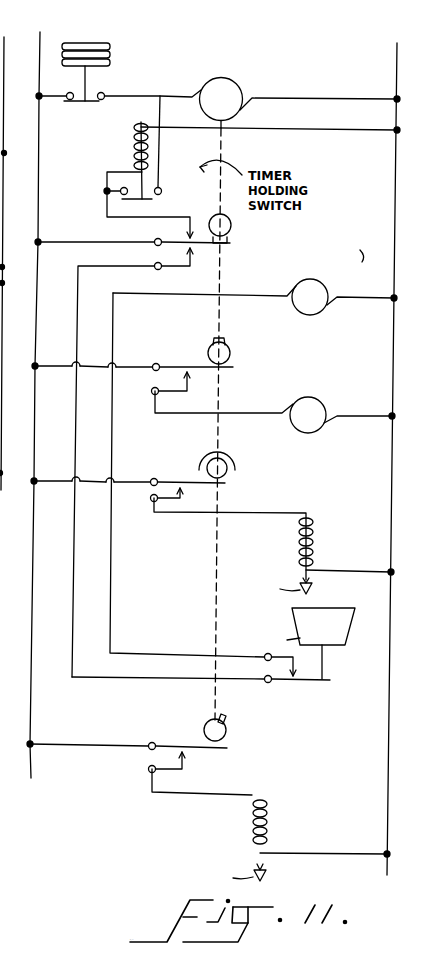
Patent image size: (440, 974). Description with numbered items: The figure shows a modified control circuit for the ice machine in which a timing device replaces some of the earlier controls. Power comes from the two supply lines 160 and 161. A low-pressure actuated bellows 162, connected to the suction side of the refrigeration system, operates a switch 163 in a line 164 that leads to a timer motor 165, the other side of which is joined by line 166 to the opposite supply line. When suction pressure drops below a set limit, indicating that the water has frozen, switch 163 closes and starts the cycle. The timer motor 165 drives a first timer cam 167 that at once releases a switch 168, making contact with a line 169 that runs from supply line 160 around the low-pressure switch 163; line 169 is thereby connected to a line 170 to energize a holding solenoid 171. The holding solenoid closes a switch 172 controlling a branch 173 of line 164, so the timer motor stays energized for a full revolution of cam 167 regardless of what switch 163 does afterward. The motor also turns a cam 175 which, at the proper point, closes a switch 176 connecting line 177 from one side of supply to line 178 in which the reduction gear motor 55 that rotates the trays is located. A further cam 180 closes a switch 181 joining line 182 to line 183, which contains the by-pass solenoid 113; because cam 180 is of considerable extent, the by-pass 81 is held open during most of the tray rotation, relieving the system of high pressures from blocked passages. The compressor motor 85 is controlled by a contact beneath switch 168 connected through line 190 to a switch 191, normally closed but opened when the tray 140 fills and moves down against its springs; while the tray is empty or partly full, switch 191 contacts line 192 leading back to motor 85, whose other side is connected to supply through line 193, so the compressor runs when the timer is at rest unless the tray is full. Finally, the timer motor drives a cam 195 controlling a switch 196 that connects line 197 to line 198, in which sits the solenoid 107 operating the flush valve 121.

The supply line 160 is at (41, 46).
The supply line 161 is at (397, 60).
The low-pressure actuated bellows 162 is at (110, 48).
The switch 163 is at (84, 103).
The line 164 is at (134, 94).
The timer motor 165 is at (237, 80).
The line 166 is at (308, 98).
The first timer cam 167 is at (230, 237).
The switch 168 is at (227, 246).
The line 169 is at (63, 241).
The line 170 is at (319, 131).
The holding solenoid 171 is at (133, 143).
The switch 172 is at (247, 190).
The branch 173 is at (157, 107).
The cam 175 is at (225, 340).
The switch 176 is at (177, 365).
The line 177 is at (55, 365).
The line 178 is at (361, 418).
The cam 180 is at (233, 457).
The switch 181 is at (200, 502).
The line 182 is at (52, 480).
The line 183 is at (348, 571).
The line 190 is at (76, 418).
The switch 191 is at (307, 681).
The line 192 is at (110, 605).
The line 193 is at (364, 301).
The cam 195 is at (227, 736).
The switch 196 is at (172, 744).
The line 197 is at (95, 744).
The line 198 is at (324, 853).
The compressor motor 85 is at (318, 282).
The reduction gear motor 55 is at (320, 370).
The by-pass solenoid 113 is at (310, 530).
The by-pass 81 is at (315, 592).
The tray 140 is at (345, 637).
The solenoid 107 is at (265, 818).
The flush valve 121 is at (267, 882).